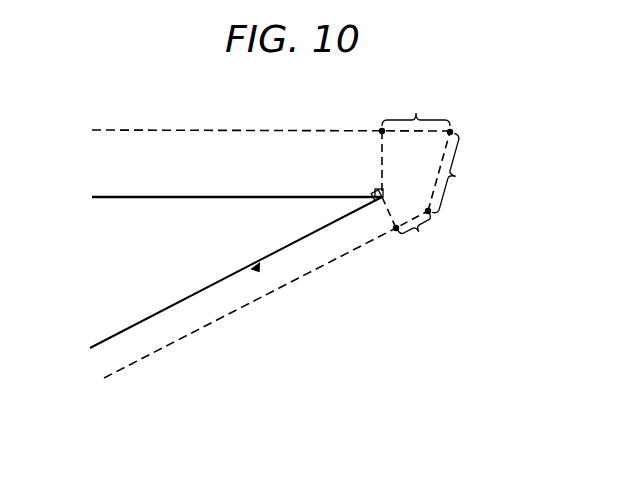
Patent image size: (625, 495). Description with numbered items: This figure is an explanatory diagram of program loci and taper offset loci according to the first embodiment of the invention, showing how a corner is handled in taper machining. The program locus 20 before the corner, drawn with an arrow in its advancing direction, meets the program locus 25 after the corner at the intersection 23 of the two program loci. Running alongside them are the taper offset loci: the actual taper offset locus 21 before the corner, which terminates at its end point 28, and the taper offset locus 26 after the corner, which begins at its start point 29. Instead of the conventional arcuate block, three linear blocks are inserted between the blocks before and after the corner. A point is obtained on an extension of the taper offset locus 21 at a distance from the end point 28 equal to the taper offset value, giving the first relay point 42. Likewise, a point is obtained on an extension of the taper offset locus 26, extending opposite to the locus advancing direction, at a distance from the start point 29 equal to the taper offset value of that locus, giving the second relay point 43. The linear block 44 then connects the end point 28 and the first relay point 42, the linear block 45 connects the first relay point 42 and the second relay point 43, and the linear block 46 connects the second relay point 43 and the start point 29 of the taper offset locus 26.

The program locus 20 is at (129, 327).
The taper offset locus 21 is at (258, 301).
The intersection of the program loci 23 is at (385, 195).
The program locus 25 is at (195, 199).
The taper offset locus 26 is at (200, 128).
The end point of the taper offset locus 28 is at (396, 231).
The start point of the taper offset locus 29 is at (380, 130).
The first relay point 42 is at (431, 213).
The second relay point 43 is at (453, 129).
The linear block 44 is at (418, 234).
The linear block 45 is at (456, 177).
The linear block 46 is at (416, 113).